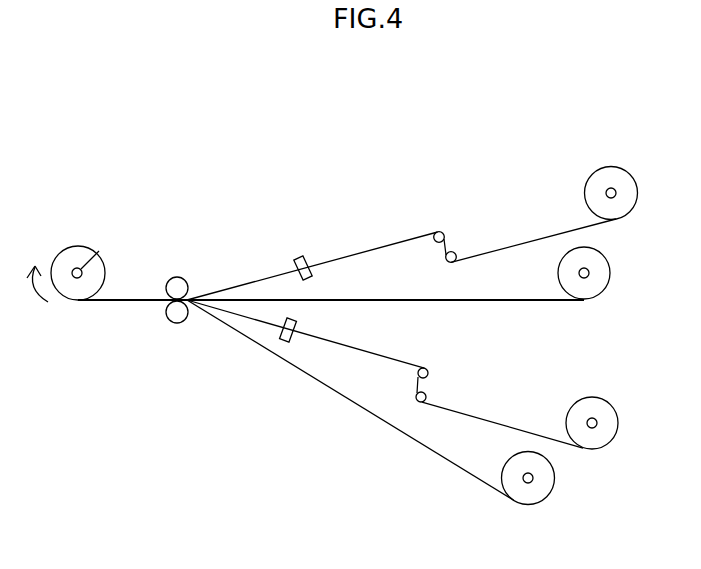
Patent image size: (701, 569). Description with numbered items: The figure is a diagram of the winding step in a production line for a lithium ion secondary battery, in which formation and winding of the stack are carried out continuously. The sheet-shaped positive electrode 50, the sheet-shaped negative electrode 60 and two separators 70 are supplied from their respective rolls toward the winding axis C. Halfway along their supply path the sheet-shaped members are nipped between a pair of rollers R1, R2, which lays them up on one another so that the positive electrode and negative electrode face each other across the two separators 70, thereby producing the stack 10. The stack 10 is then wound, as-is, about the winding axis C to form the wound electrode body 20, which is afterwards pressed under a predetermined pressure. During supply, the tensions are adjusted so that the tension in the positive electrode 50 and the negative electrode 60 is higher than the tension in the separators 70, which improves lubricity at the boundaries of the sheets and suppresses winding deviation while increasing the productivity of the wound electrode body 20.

The wound electrode body 20 is at (62, 252).
The winding axis C is at (99, 251).
The stack 10 is at (107, 303).
The roller R1 is at (180, 277).
The roller R2 is at (175, 324).
The sheet-shaped positive electrode 50 is at (370, 248).
The sheet-shaped negative electrode 60 is at (482, 418).
The separators 70 is at (470, 302).